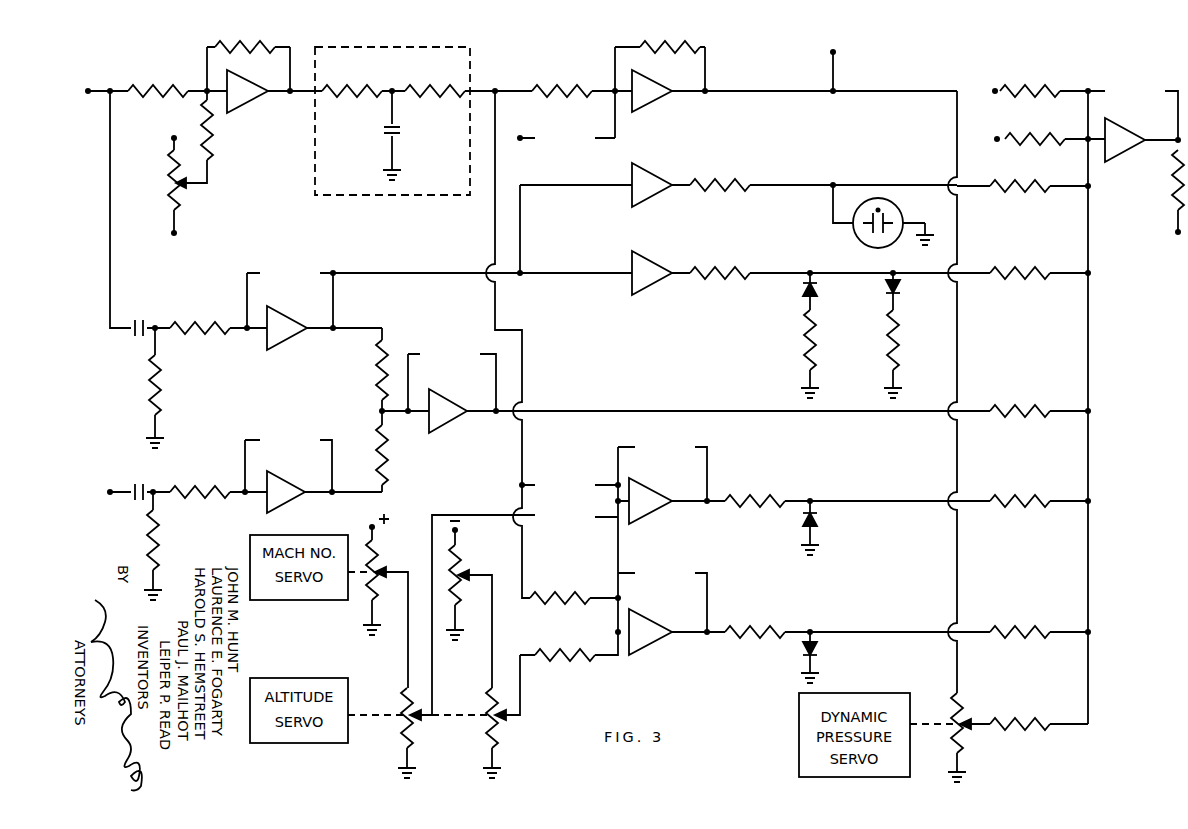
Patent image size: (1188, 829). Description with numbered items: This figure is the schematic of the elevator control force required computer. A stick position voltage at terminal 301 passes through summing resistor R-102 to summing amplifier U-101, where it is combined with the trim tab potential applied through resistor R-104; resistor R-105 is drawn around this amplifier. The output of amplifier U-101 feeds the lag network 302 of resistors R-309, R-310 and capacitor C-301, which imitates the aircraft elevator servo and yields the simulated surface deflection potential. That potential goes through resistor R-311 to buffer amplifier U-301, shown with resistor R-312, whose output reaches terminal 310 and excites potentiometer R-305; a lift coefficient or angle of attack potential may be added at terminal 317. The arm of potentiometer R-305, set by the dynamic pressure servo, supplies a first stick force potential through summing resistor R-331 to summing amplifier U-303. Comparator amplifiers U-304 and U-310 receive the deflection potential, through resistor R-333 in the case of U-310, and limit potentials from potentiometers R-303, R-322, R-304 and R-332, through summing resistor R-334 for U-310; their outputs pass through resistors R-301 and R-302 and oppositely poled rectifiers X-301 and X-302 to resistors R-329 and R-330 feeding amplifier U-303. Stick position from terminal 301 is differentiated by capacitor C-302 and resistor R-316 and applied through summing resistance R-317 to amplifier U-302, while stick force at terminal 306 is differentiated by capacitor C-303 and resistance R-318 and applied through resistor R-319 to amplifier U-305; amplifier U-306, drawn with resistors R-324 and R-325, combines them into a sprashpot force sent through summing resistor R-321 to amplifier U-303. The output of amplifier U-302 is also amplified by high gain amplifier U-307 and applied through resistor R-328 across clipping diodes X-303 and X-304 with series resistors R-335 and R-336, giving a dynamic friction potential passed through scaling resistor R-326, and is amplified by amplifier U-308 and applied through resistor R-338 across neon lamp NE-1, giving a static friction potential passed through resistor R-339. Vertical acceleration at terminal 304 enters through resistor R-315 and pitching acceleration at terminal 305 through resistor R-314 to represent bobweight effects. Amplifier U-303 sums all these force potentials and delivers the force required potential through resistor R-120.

The terminal 301 is at (87, 89).
The lag network 302 is at (373, 48).
The terminal 304 is at (996, 137).
The terminal 305 is at (992, 91).
The terminal 306 is at (109, 490).
The terminal 310 is at (832, 50).
The terminal 317 is at (518, 136).
The summing resistor R-102 is at (154, 89).
The resistor R-104 is at (213, 126).
The feedback resistor R-105 is at (238, 43).
The summing amplifier U-101 is at (244, 102).
The resistor R-309 is at (335, 89).
The resistor R-310 is at (423, 88).
The capacitor C-301 is at (402, 124).
The resistor R-311 is at (553, 89).
The feedback resistor R-312 is at (651, 45).
The buffer amplifier U-301 is at (643, 110).
The amplifier U-308 is at (628, 182).
The resistor R-338 is at (704, 186).
The neon lamp NE-1 is at (897, 222).
The resistor R-314 is at (1027, 89).
The resistor R-315 is at (1035, 138).
The summing amplifier U-303 is at (1108, 162).
The resistor R-120 is at (1172, 189).
The resistor R-339 is at (1004, 189).
The scaling resistor R-326 is at (1005, 276).
The summing resistor R-321 is at (1004, 408).
The resistor R-329 is at (1008, 498).
The summing resistor R-330 is at (1006, 628).
The summing resistor R-331 is at (1005, 722).
The potentiometer R-305 is at (968, 738).
The capacitor C-302 is at (134, 319).
The summing resistance R-317 is at (186, 327).
The summing amplifier U-302 is at (277, 349).
The resistor R-316 is at (162, 382).
The resistor R-324 is at (374, 366).
The resistor R-325 is at (386, 441).
The amplifier U-306 is at (450, 421).
The high gain amplifier U-307 is at (628, 271).
The resistor R-328 is at (708, 275).
The diode X-303 is at (804, 290).
The diode X-304 is at (888, 290).
The resistor R-335 is at (804, 339).
The resistor R-336 is at (889, 339).
The capacitor C-303 is at (134, 502).
The resistor R-319 is at (193, 490).
The summing amplifier U-305 is at (267, 508).
The resistance R-318 is at (160, 548).
The potentiometer R-303 is at (384, 552).
The potentiometer R-304 is at (469, 552).
The potentiometer R-322 is at (414, 736).
The potentiometer R-332 is at (494, 736).
The summing amplifier U-304 is at (654, 515).
The resistor R-301 is at (750, 499).
The diode X-301 is at (818, 522).
The resistor R-333 is at (553, 598).
The summing resistor R-334 is at (556, 655).
The summing amplifier U-310 is at (649, 649).
The resistor R-302 is at (755, 621).
The rectifier X-302 is at (818, 650).